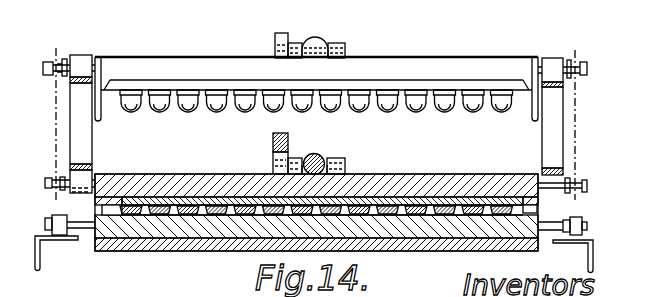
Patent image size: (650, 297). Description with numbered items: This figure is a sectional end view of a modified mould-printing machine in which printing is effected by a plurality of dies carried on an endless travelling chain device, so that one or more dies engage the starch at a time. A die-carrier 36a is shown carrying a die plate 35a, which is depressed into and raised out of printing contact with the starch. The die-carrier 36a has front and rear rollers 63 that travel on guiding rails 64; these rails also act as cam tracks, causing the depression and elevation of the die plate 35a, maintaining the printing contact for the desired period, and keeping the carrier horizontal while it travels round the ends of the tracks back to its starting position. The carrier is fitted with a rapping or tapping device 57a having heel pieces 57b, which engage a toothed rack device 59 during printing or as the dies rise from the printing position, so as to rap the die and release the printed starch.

The die-carrier 36a is at (190, 68).
The die plate 35a is at (415, 206).
The guiding rail 64 is at (91, 133).
The roller 63 is at (82, 56).
The rapping or tapping device 57a is at (323, 43).
The heel piece 57b is at (283, 38).
The adjusting screw 59 is at (289, 140).